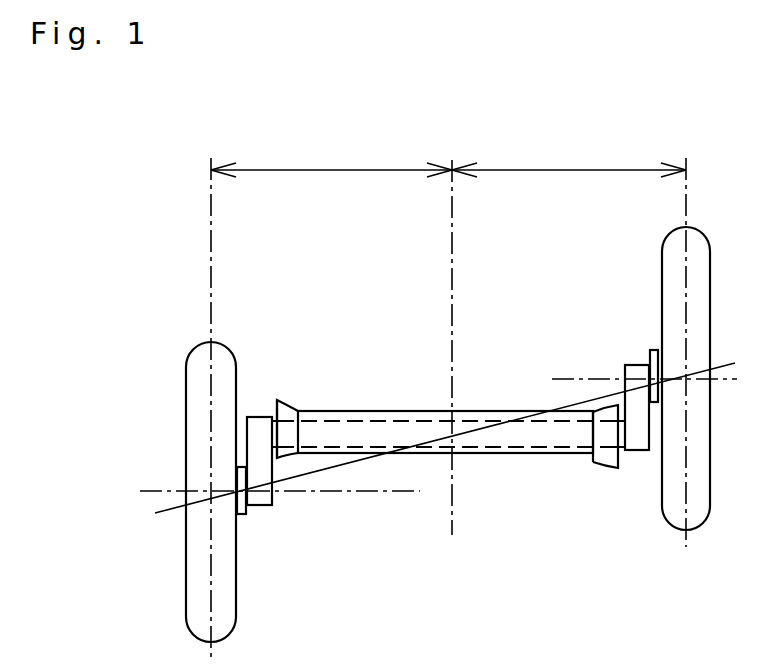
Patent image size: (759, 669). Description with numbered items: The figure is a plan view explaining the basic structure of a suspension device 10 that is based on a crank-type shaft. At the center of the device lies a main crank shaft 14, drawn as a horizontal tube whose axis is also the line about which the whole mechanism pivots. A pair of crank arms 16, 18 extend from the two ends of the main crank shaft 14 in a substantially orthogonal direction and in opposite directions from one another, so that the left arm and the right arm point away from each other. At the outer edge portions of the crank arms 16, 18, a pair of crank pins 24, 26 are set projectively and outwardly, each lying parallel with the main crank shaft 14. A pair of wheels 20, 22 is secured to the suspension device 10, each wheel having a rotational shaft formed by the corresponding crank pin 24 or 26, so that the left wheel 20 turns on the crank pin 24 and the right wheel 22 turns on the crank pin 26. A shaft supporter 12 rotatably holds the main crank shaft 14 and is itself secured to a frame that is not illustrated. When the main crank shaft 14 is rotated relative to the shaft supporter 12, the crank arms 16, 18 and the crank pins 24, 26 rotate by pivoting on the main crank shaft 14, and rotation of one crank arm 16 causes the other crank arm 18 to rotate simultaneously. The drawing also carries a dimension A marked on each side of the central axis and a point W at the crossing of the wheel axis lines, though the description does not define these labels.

The suspension device 10 is at (313, 262).
The shaft supporter 12 is at (345, 411).
The main crank shaft 14 is at (506, 473).
The crank arm 16 is at (263, 462).
The crank arm 18 is at (640, 390).
The wheel 20 is at (205, 346).
The wheel 22 is at (666, 493).
The crank pin 24 is at (247, 516).
The crank pin 26 is at (656, 350).
The half track width dimension A is at (448, 333).
The intersection point of wheel axes W is at (463, 430).